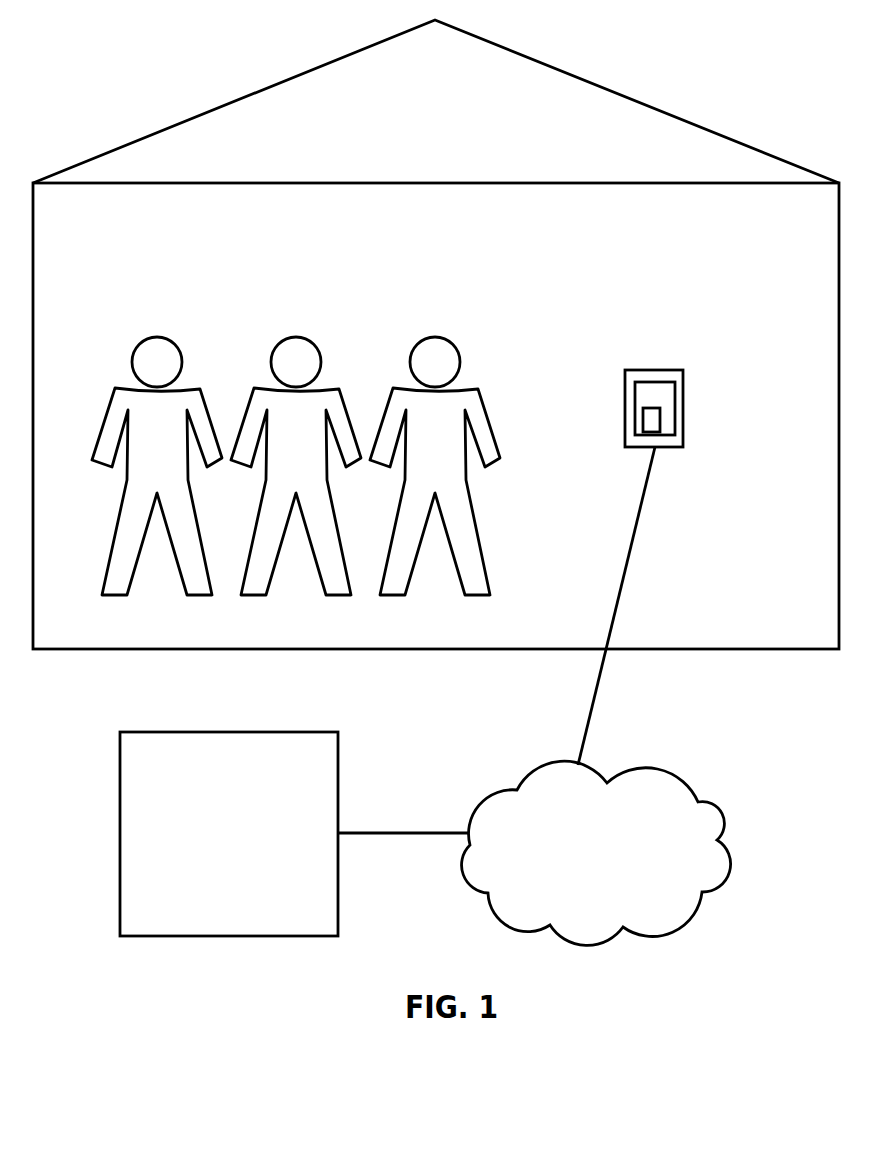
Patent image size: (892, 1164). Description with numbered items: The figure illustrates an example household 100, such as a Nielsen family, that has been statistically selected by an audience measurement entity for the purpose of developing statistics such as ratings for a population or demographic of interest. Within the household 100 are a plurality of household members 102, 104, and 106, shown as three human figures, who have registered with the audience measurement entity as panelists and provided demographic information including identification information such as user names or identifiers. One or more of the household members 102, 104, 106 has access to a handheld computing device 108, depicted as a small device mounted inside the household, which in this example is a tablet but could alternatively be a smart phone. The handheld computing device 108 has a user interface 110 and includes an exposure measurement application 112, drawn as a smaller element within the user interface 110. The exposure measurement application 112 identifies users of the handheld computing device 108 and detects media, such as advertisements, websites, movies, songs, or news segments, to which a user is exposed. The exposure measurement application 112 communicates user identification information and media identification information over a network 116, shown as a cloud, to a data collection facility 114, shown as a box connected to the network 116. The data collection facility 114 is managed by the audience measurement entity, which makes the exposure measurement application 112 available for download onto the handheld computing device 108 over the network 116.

The household 100 is at (198, 112).
The household member 102 is at (157, 337).
The household member 104 is at (296, 337).
The household member 106 is at (436, 333).
The handheld computing device 108 is at (655, 370).
The user interface 110 is at (676, 403).
The exposure measurement application 112 is at (660, 425).
The data collection facility 114 is at (229, 834).
The network 116 is at (662, 769).